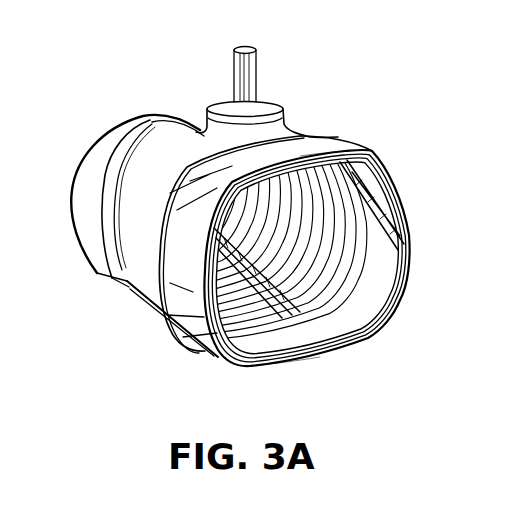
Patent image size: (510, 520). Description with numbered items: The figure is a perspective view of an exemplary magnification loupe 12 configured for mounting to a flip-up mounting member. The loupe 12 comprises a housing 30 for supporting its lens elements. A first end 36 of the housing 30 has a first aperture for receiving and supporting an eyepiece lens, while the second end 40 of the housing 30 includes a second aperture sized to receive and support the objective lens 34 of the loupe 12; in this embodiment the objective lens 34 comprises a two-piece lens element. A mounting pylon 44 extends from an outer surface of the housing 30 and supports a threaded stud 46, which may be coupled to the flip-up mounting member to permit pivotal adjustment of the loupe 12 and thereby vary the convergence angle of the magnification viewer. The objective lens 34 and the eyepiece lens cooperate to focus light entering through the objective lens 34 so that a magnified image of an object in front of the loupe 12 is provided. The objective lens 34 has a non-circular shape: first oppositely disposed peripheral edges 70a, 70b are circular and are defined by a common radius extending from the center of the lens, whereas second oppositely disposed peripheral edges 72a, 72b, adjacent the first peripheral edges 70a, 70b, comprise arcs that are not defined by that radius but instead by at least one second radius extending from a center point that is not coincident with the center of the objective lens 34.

The magnification loupe 12 is at (390, 84).
The housing 30 is at (156, 314).
The objective lens 34 is at (380, 199).
The first end 36 is at (94, 151).
The second end 40 is at (380, 325).
The mounting pylon 44 is at (277, 100).
The threaded stud 46 is at (245, 48).
The first peripheral edge 70a is at (216, 264).
The first peripheral edge 70b is at (399, 240).
The second peripheral edge 72a is at (338, 158).
The second peripheral edge 72b is at (312, 355).